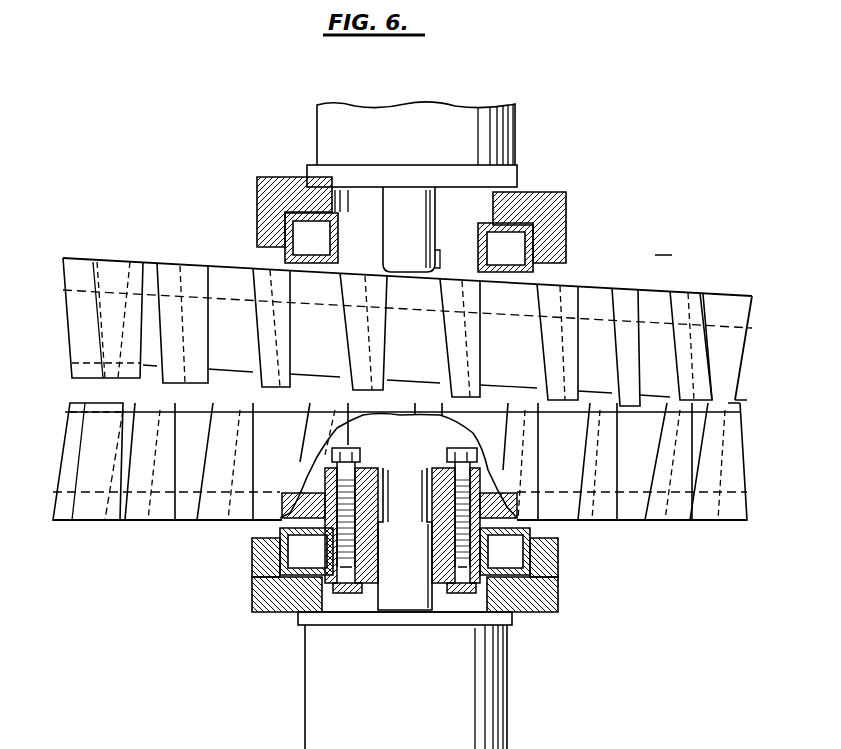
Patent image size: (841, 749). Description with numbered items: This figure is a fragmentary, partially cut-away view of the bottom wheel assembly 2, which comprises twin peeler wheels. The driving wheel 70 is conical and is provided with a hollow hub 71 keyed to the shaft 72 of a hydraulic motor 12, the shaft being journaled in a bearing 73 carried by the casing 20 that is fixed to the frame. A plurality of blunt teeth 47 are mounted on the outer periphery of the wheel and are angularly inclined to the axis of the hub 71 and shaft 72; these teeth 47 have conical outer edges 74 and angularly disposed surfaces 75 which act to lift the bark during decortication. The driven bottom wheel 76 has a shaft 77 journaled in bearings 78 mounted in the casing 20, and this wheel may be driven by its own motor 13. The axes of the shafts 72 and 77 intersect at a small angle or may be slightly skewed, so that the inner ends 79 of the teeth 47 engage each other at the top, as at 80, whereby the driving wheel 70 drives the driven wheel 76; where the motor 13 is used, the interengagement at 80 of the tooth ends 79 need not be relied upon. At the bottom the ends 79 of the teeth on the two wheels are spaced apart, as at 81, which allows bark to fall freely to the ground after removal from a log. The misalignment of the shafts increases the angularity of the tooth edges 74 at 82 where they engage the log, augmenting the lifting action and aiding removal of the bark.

The bottom wheel assembly 2 is at (663, 243).
The hydraulic motor 12 is at (330, 683).
The motor 13 is at (490, 128).
The casing 20 is at (560, 205).
The blunt teeth 47 is at (628, 298).
The driving wheel 70 is at (683, 520).
The hollow hub 71 is at (428, 470).
The shaft 72 is at (410, 540).
The bearing 73 is at (295, 555).
The conical outer edges 74 is at (70, 352).
The angularly disposed surfaces 75 is at (75, 277).
The driven bottom wheel 76 is at (230, 275).
The shaft 77 is at (415, 200).
The bearings 78 is at (500, 250).
The inner ends 79 is at (320, 405).
The interengagement 80 is at (726, 409).
The spacing 81 is at (90, 385).
The engagement location 82 is at (745, 357).